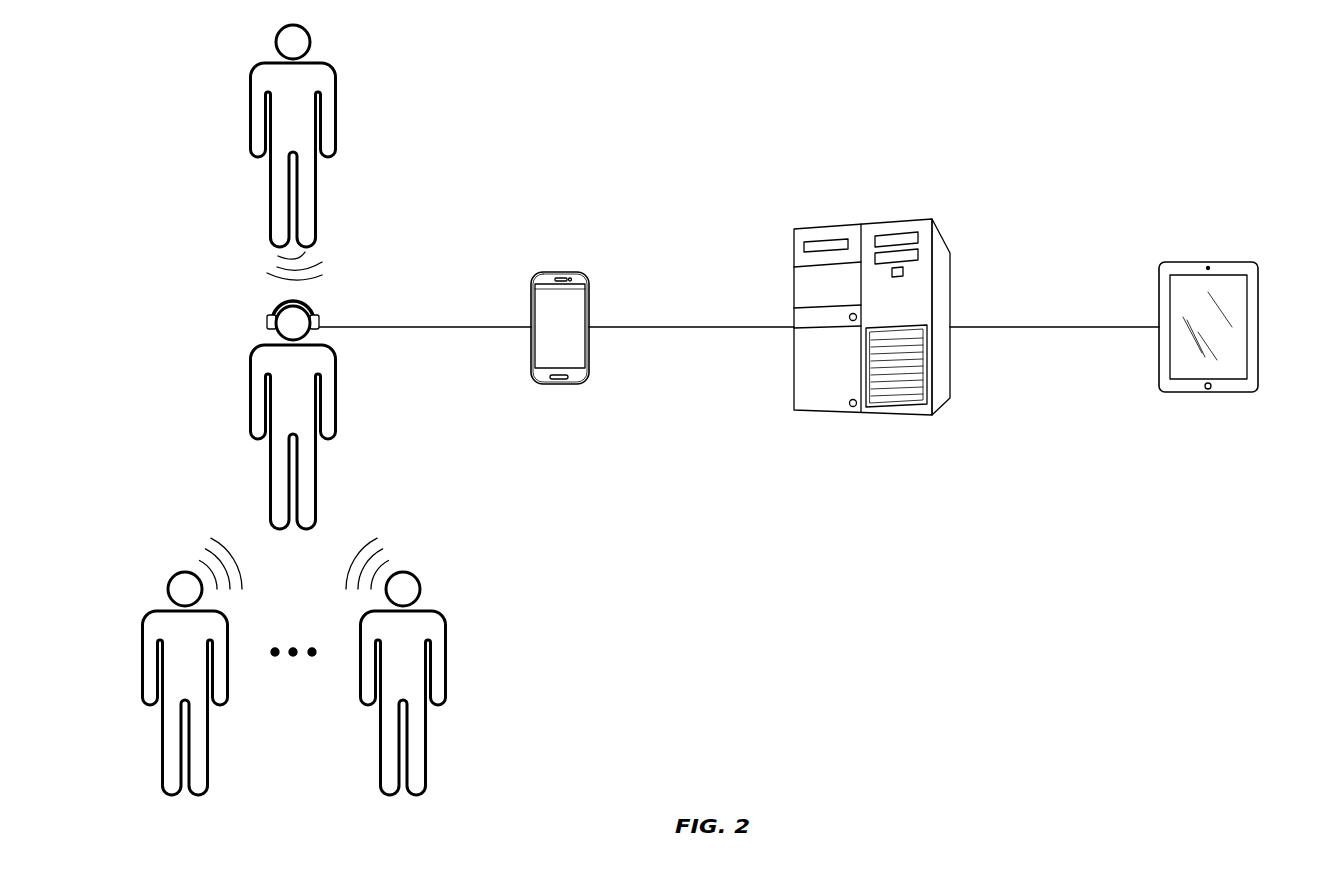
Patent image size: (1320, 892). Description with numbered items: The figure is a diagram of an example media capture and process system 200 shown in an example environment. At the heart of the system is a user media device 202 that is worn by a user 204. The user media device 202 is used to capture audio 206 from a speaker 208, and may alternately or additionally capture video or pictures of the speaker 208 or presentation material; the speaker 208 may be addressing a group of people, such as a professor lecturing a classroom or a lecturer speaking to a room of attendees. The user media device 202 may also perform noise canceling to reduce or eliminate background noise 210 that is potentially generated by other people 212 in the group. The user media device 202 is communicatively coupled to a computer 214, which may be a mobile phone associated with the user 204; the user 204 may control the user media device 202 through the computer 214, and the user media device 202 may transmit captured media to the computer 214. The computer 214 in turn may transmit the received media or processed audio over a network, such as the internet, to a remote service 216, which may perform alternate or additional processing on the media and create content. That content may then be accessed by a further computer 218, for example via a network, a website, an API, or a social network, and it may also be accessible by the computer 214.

The media capture and process system 200 is at (1198, 104).
The user media device 202 is at (267, 322).
The user 204 is at (252, 372).
The audio 206 is at (278, 268).
The speaker 208 is at (252, 90).
The background noise 210 is at (400, 546).
The other people 212 is at (448, 598).
The computer 214 is at (576, 272).
The remote service 216 is at (898, 219).
The computer 218 is at (1200, 262).